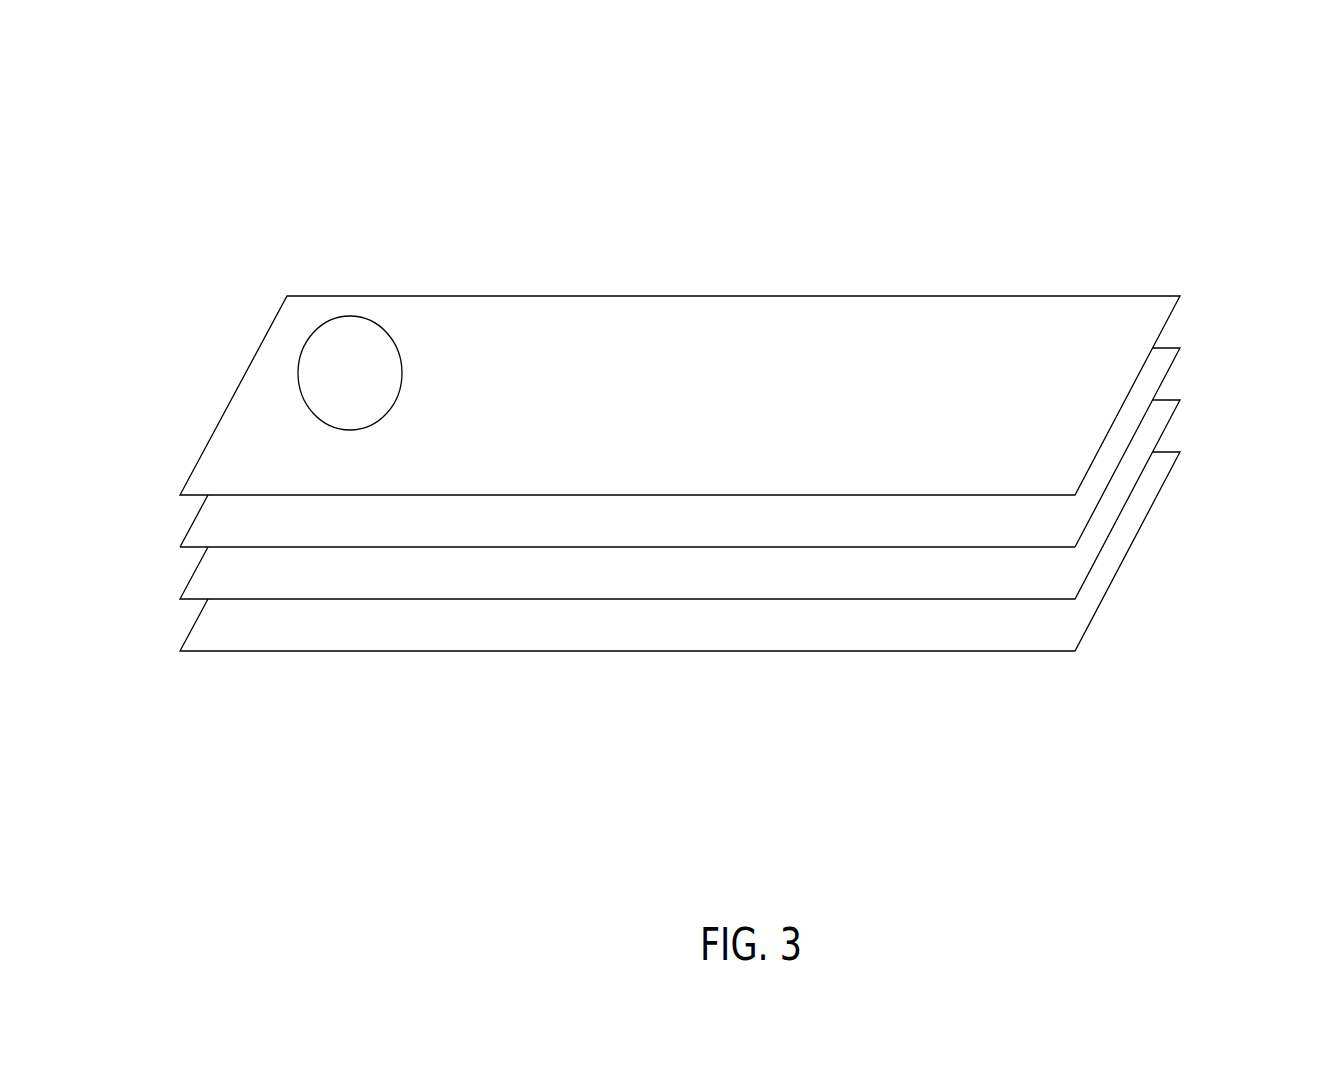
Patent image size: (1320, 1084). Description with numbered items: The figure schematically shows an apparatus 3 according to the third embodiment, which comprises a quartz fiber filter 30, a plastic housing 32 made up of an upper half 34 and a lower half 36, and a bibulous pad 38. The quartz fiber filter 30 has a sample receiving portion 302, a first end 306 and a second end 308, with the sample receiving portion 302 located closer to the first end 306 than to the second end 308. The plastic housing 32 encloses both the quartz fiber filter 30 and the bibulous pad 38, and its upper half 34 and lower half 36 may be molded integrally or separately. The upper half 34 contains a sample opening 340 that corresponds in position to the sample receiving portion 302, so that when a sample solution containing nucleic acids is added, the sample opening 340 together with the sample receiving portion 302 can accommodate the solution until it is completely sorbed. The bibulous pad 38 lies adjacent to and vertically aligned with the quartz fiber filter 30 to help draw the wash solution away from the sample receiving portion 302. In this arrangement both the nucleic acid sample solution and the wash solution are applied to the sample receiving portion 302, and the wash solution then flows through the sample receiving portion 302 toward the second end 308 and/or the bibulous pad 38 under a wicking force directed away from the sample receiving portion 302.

The apparatus 3 is at (285, 130).
The quartz fiber filter 30 is at (1115, 472).
The plastic housing 32 is at (1153, 502).
The upper half 34 is at (658, 327).
The lower half 36 is at (583, 617).
The bibulous pad 38 is at (1083, 582).
The sample receiving portion 302 is at (315, 350).
The first end 306 is at (217, 525).
The second end 308 is at (995, 523).
The sample opening 340 is at (350, 315).